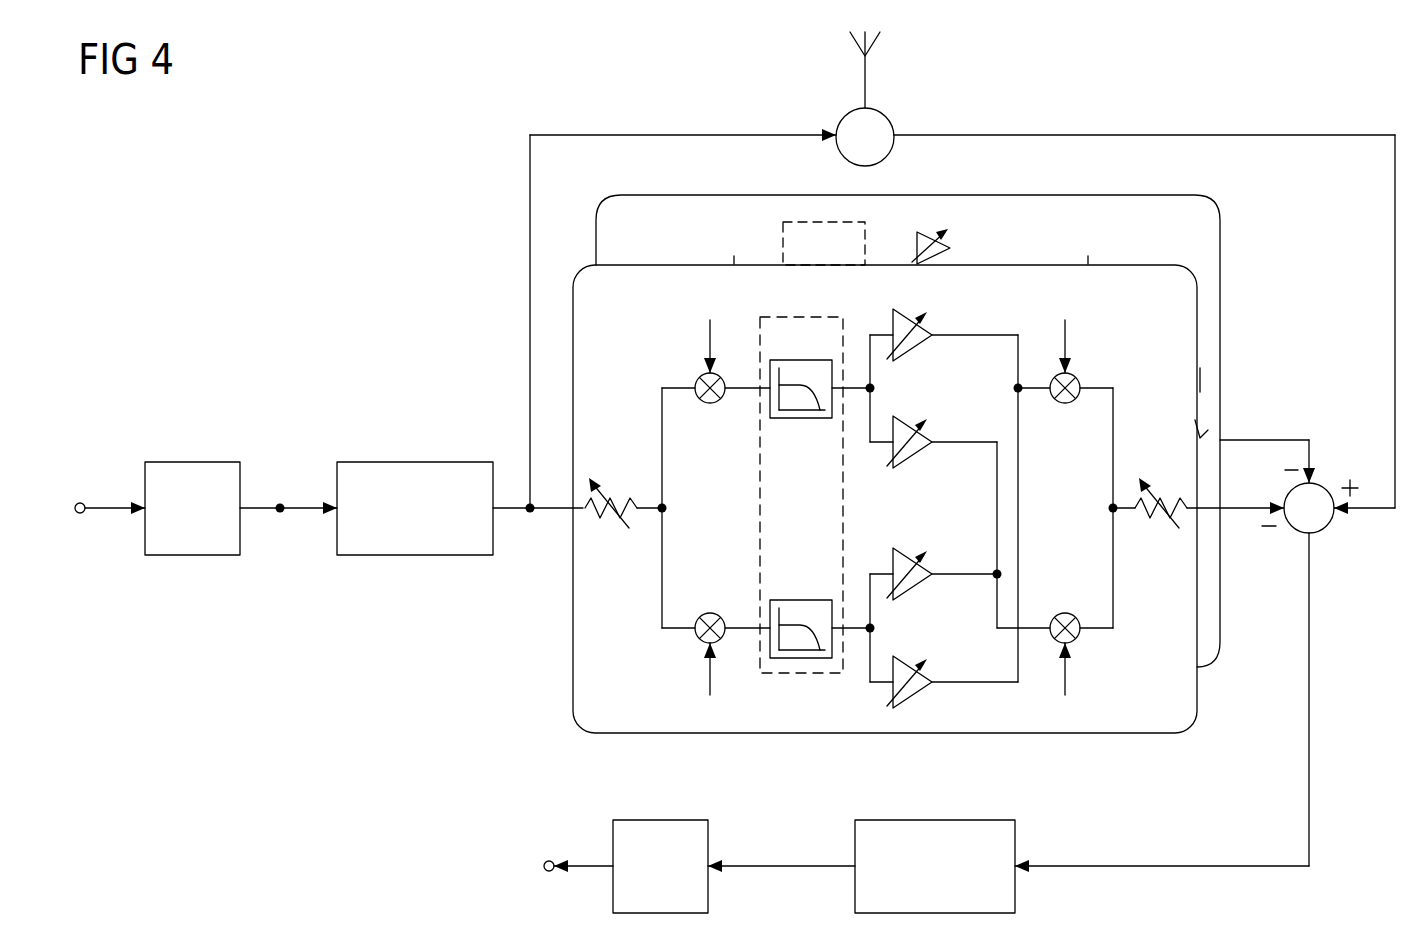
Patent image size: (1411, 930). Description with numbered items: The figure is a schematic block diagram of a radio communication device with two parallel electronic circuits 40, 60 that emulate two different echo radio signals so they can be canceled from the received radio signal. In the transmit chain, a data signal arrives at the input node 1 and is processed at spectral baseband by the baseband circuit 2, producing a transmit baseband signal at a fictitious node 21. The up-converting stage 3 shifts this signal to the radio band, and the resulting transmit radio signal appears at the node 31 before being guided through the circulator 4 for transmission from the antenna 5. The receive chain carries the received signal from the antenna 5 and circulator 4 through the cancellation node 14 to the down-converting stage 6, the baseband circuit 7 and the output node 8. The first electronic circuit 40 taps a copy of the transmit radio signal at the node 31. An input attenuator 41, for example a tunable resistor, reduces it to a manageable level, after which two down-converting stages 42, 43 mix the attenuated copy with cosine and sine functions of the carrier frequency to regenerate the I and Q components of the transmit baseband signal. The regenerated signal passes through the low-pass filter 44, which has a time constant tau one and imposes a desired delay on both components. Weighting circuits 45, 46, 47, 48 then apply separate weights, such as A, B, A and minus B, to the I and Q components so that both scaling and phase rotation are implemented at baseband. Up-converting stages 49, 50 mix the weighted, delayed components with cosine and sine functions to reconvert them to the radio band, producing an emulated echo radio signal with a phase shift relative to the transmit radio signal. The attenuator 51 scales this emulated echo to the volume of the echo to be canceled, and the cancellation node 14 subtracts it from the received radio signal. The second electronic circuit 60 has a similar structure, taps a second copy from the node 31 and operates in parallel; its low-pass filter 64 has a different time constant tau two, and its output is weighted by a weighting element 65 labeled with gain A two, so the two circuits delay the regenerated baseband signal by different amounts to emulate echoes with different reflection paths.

The input node 1 is at (80, 502).
The baseband circuit 2 is at (192, 462).
The node 21 is at (281, 503).
The up-converting stage 3 is at (415, 462).
The node 31 is at (530, 513).
The circulator 4 is at (845, 118).
The antenna 5 is at (867, 86).
The down-converting stage 6 is at (937, 820).
The baseband circuit 7 is at (660, 820).
The output node 8 is at (549, 860).
The cancellation node 14 is at (1326, 527).
The electronic circuit 40 is at (573, 634).
The input attenuator 41 is at (618, 498).
The down-converting stage 42 is at (710, 404).
The down-converting stage 43 is at (709, 614).
The low-pass filter 44 is at (760, 512).
The weighting circuit 45 is at (930, 325).
The weighting circuit 46 is at (930, 432).
The weighting circuit 47 is at (930, 564).
The weighting circuit 48 is at (930, 672).
The up-converting stage 49 is at (1065, 404).
The up-converting stage 50 is at (1064, 616).
The attenuator 51 is at (1168, 498).
The second electronic circuit 60 is at (1221, 258).
The low-pass filter 64 is at (803, 221).
The variable gain amplifier A2 65 is at (952, 252).